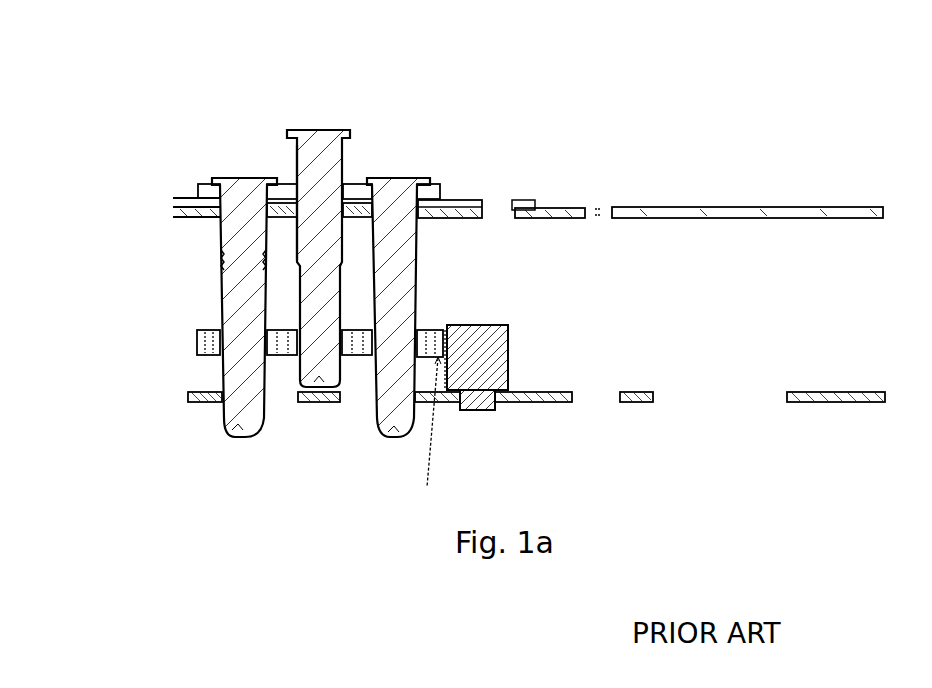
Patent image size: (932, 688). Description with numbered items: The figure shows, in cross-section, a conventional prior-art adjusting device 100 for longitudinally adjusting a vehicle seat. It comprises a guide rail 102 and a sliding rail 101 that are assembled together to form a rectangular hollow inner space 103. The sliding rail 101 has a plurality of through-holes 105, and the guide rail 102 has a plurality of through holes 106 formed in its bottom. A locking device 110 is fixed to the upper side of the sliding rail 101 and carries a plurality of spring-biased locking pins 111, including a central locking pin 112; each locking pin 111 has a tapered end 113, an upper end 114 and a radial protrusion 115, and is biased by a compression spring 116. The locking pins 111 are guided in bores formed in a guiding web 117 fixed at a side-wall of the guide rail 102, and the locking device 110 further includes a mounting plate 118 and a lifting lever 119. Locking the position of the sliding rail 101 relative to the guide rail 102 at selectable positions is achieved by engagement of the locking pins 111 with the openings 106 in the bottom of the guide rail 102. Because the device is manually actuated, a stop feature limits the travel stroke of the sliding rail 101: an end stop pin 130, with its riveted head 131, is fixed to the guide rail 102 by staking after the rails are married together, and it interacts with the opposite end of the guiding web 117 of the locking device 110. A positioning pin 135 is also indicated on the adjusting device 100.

The adjusting device 100 is at (578, 153).
The sliding rail 101 is at (698, 213).
The guide rail 102 is at (199, 404).
The hollow inner space 103 is at (793, 292).
The through-hole in sliding rail 105 is at (498, 205).
The through hole in guide rail 106 is at (362, 397).
The locking device 110 is at (424, 155).
The locking pin 111 is at (232, 236).
The central locking pin 112 is at (323, 159).
The tapered end of locking pin 113 is at (250, 422).
The upper end of locking pin 114 is at (322, 143).
The radial protrusion of locking pin 115 is at (350, 135).
The compression spring 116 is at (220, 274).
The guiding web 117 is at (213, 345).
The mounting plate 118 is at (467, 200).
The lifting lever 119 is at (435, 189).
The end stop pin 130 is at (511, 346).
The riveted head of end stop pin 131 is at (478, 404).
The positioning pin 135 is at (902, 598).